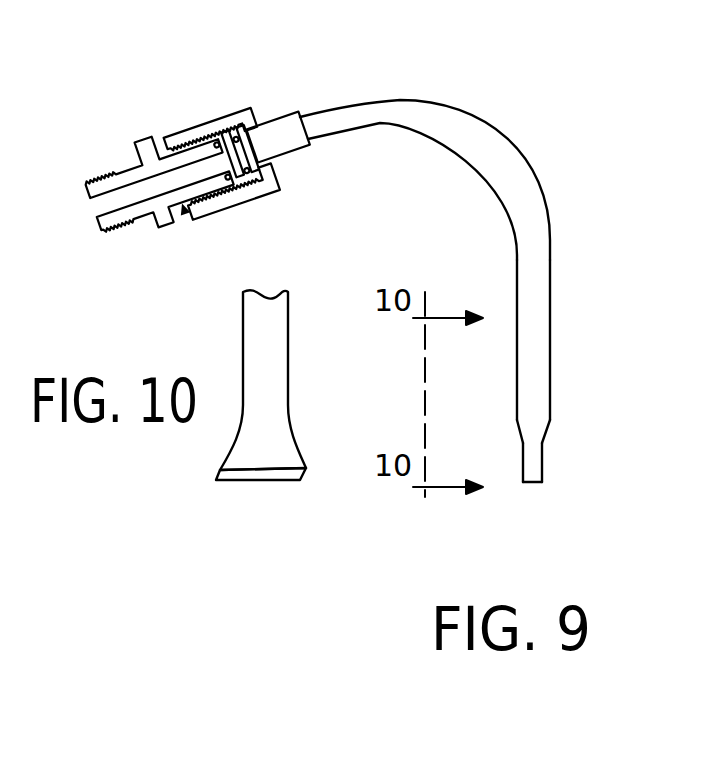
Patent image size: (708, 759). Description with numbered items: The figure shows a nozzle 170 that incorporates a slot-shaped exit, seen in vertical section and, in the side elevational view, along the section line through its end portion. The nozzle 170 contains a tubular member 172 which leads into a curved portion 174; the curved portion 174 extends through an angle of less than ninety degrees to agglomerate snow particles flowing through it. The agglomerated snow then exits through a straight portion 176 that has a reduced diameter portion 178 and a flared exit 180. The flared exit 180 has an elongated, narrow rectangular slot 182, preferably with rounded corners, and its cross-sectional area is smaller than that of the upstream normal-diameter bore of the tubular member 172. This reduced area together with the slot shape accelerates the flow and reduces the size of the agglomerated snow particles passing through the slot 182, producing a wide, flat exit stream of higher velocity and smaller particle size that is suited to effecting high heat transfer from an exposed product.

In FIG. 9, the nozzle 170 is at (262, 94).
In FIG. 9, the tubular member 172 is at (437, 102).
In FIG. 9, the curved portion 174 is at (407, 131).
In FIG. 9, the straight portion 176 is at (516, 250).
In FIG. 9, the reduced diameter portion 178 is at (550, 427).
In FIG. 9, the flared exit 180 is at (543, 478).
In FIG. 10, the flared exit 180 is at (285, 428).
In FIG. 9, the slot 182 is at (528, 483).
In FIG. 10, the slot 182 is at (262, 480).